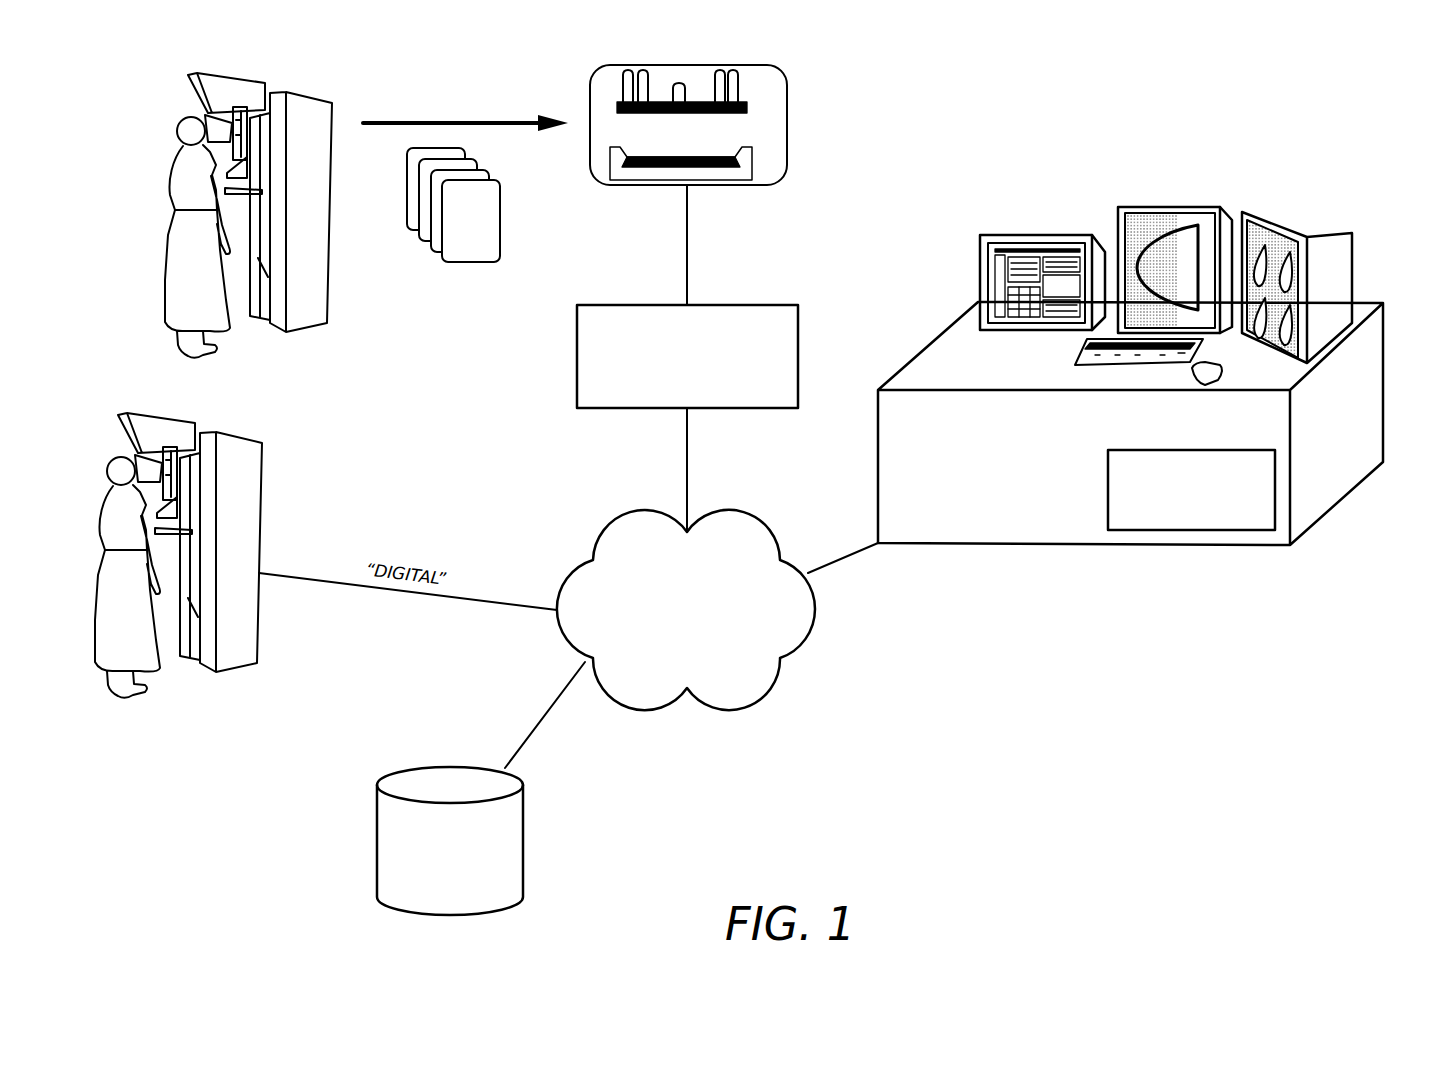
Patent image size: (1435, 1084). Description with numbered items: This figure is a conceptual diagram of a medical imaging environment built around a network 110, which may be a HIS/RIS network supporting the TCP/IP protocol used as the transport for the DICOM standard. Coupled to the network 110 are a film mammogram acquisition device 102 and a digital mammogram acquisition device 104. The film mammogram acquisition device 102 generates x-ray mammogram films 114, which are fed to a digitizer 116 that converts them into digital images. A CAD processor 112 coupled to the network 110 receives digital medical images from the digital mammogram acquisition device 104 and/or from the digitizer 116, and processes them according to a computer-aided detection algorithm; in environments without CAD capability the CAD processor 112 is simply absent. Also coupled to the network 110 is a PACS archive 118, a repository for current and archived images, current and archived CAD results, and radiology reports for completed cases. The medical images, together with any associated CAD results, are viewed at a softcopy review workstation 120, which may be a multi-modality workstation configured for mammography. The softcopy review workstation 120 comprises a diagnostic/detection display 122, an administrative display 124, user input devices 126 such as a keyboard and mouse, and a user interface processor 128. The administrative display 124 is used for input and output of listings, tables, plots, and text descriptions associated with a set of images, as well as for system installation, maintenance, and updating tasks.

The film mammogram acquisition device 102 is at (322, 270).
The digital mammogram acquisition device 104 is at (255, 495).
The network 110 is at (608, 532).
The CAD processor 112 is at (577, 357).
The x-ray mammogram films 114 is at (492, 242).
The digitizer 116 is at (787, 122).
The PACS archive 118 is at (523, 843).
The softcopy review workstation 120 is at (922, 137).
The diagnostic/detection display 122 is at (1290, 215).
The administrative display 124 is at (1033, 235).
The user input devices 126 is at (1075, 360).
The user interface processor 128 is at (1108, 488).